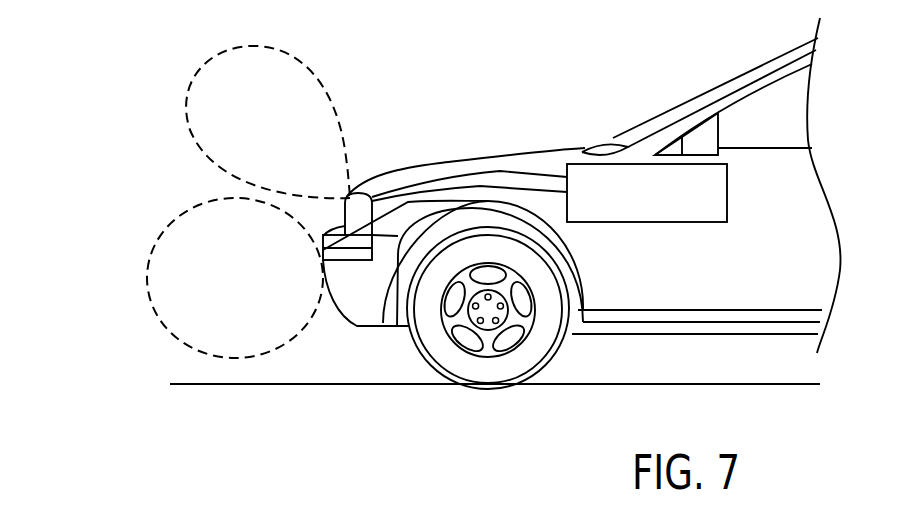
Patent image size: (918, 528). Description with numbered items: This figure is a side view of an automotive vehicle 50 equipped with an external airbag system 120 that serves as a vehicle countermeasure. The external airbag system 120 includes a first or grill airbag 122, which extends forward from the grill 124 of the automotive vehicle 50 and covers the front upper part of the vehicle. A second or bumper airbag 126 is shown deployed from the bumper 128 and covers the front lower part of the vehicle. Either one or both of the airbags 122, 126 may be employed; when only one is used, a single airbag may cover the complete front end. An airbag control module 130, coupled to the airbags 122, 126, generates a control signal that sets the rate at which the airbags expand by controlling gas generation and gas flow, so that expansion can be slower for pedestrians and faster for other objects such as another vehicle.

The external airbag system 120 is at (112, 146).
The automotive vehicle 50 is at (507, 152).
The grill airbag 122 is at (333, 104).
The grill 124 is at (352, 196).
The bumper airbag 126 is at (148, 283).
The bumper 128 is at (332, 283).
The airbag control module 130 is at (645, 222).